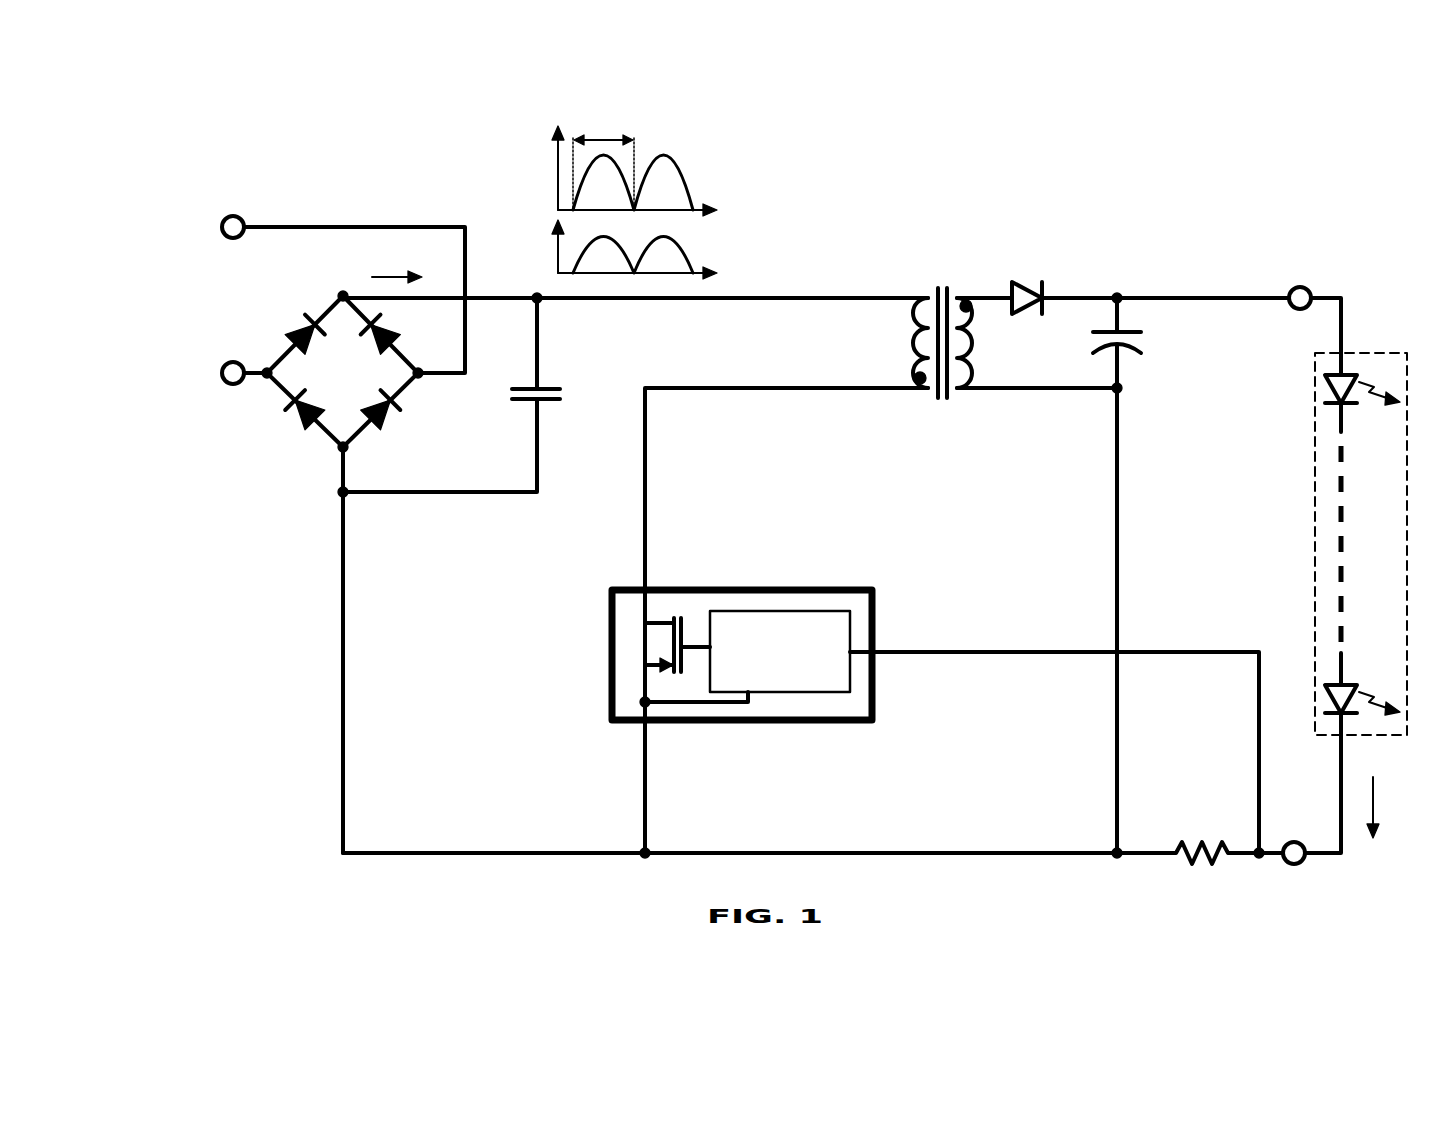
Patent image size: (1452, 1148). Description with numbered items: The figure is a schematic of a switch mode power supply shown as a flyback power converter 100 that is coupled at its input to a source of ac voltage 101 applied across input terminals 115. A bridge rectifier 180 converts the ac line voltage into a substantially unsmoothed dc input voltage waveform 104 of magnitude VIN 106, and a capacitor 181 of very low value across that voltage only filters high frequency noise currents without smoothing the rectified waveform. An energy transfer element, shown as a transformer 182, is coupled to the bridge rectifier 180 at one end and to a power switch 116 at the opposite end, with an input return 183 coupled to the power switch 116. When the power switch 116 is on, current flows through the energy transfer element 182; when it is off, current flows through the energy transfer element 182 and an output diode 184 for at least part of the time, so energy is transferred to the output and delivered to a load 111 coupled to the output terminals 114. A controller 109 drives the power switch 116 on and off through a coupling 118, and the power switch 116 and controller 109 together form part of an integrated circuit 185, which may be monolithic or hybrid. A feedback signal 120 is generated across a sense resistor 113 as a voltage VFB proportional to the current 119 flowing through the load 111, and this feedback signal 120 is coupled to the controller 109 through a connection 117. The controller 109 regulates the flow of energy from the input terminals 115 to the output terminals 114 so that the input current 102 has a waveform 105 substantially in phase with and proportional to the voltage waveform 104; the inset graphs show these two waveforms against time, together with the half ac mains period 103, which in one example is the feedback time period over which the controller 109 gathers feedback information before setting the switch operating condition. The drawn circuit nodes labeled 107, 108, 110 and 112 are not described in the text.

The power converter 100 is at (1005, 138).
The source of ac voltage 101 is at (268, 292).
The input current 102 is at (383, 243).
The ac mains period 103 is at (632, 123).
The dc input voltage waveform 104 is at (683, 172).
The input current waveform 105 is at (693, 257).
The input voltage VIN 106 is at (603, 393).
The drain terminal 107 is at (640, 568).
The source terminal 108 is at (640, 730).
The controller 109 is at (750, 605).
The feedback terminal 110 is at (910, 620).
The load 111 is at (1309, 488).
The output capacitor 112 is at (1100, 323).
The sense resistor 113 is at (1200, 835).
The output terminals 114 is at (1293, 288).
The input terminals 115 is at (244, 210).
The power switch 116 is at (610, 650).
The connection 117 is at (1023, 645).
The coupling 118 is at (697, 652).
The current flowing through load 119 is at (1388, 835).
The feedback signal 120 is at (940, 732).
The bridge rectifier 180 is at (345, 371).
The capacitor 181 is at (513, 420).
The energy transfer element 182 is at (940, 280).
The input return 183 is at (507, 845).
The output diode 184 is at (1012, 282).
The integrated circuit 185 is at (785, 578).